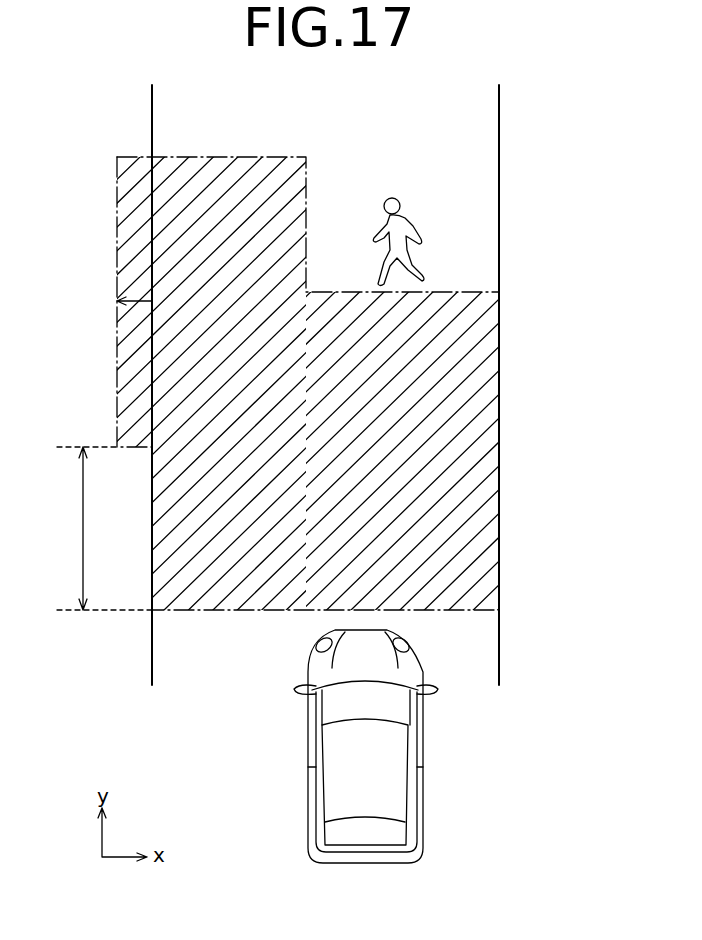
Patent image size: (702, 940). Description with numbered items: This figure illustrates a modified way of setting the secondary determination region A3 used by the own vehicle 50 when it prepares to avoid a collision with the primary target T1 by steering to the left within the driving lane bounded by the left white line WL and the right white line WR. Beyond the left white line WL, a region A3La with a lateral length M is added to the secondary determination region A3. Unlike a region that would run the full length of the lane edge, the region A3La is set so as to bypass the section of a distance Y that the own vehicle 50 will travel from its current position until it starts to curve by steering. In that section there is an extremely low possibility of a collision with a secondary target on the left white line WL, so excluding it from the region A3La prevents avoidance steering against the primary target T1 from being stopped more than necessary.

The secondary determination region A3 is at (266, 162).
The region extending beyond the left white line A3La is at (117, 168).
The left white line WL is at (152, 649).
The right white line WR is at (503, 648).
The lateral length M is at (146, 299).
The distance Y is at (104, 528).
The primary target T1 is at (414, 222).
The own vehicle 50 is at (423, 823).